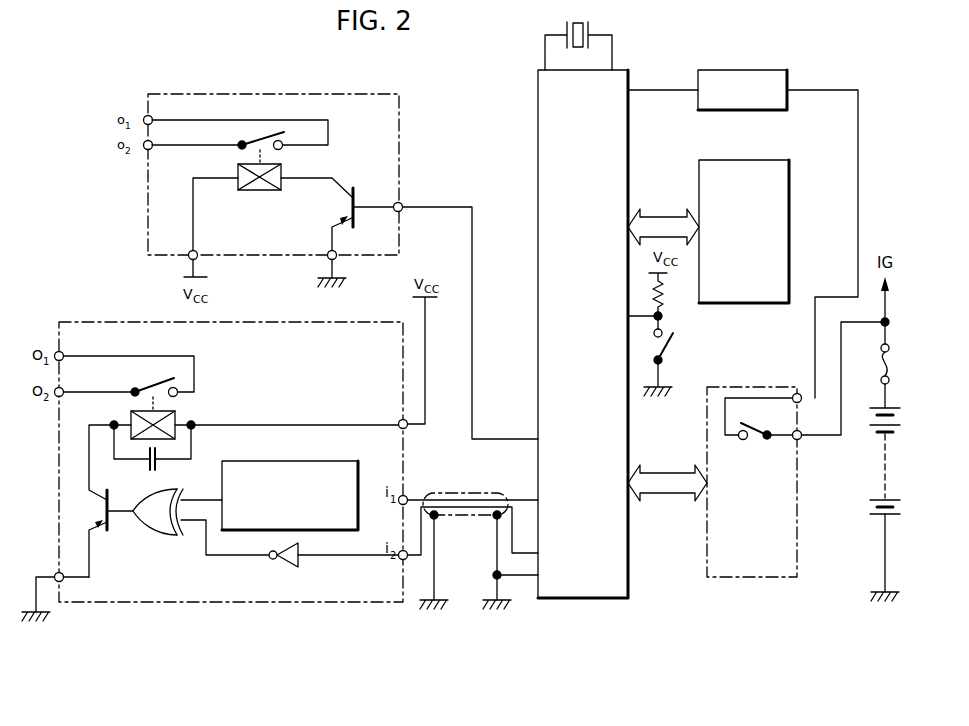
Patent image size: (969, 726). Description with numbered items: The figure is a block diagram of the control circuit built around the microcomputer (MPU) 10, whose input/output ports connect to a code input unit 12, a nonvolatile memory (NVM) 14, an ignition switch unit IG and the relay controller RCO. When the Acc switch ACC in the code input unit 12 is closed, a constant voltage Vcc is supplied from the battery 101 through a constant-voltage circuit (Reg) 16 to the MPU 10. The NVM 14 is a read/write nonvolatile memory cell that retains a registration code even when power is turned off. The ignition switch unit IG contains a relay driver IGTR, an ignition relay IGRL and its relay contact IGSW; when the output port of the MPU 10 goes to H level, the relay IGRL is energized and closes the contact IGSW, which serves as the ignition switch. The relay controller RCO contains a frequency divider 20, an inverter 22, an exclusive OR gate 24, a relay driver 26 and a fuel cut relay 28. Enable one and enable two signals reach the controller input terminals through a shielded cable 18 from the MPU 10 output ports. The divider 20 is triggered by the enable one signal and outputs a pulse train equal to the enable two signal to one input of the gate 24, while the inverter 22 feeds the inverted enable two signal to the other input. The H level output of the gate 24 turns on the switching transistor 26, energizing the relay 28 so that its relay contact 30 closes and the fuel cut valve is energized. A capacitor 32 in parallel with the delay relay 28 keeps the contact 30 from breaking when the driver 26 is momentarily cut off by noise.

The microcomputer (MPU) 10 is at (603, 599).
The code input unit 12 is at (707, 558).
The nonvolatile memory (NVM) 14 is at (789, 251).
The constant-voltage circuit (Reg) 16 is at (737, 70).
The shielded cable 18 is at (453, 492).
The frequency divider 20 is at (328, 461).
The inverter 22 is at (282, 566).
The exclusive OR gate 24 is at (143, 534).
The relay driver 26 is at (112, 530).
The fuel cut relay 28 is at (178, 418).
The relay contact 30 is at (158, 382).
The capacitor 32 is at (149, 468).
The battery 101 is at (873, 437).
The ignition switch unit IG is at (400, 109).
The relay contact (ignition switch) IGSW is at (266, 132).
The ignition relay IGRL is at (243, 192).
The relay driver IGTR is at (355, 189).
The relay controller RCO is at (208, 603).
The Acc switch ACC is at (763, 417).